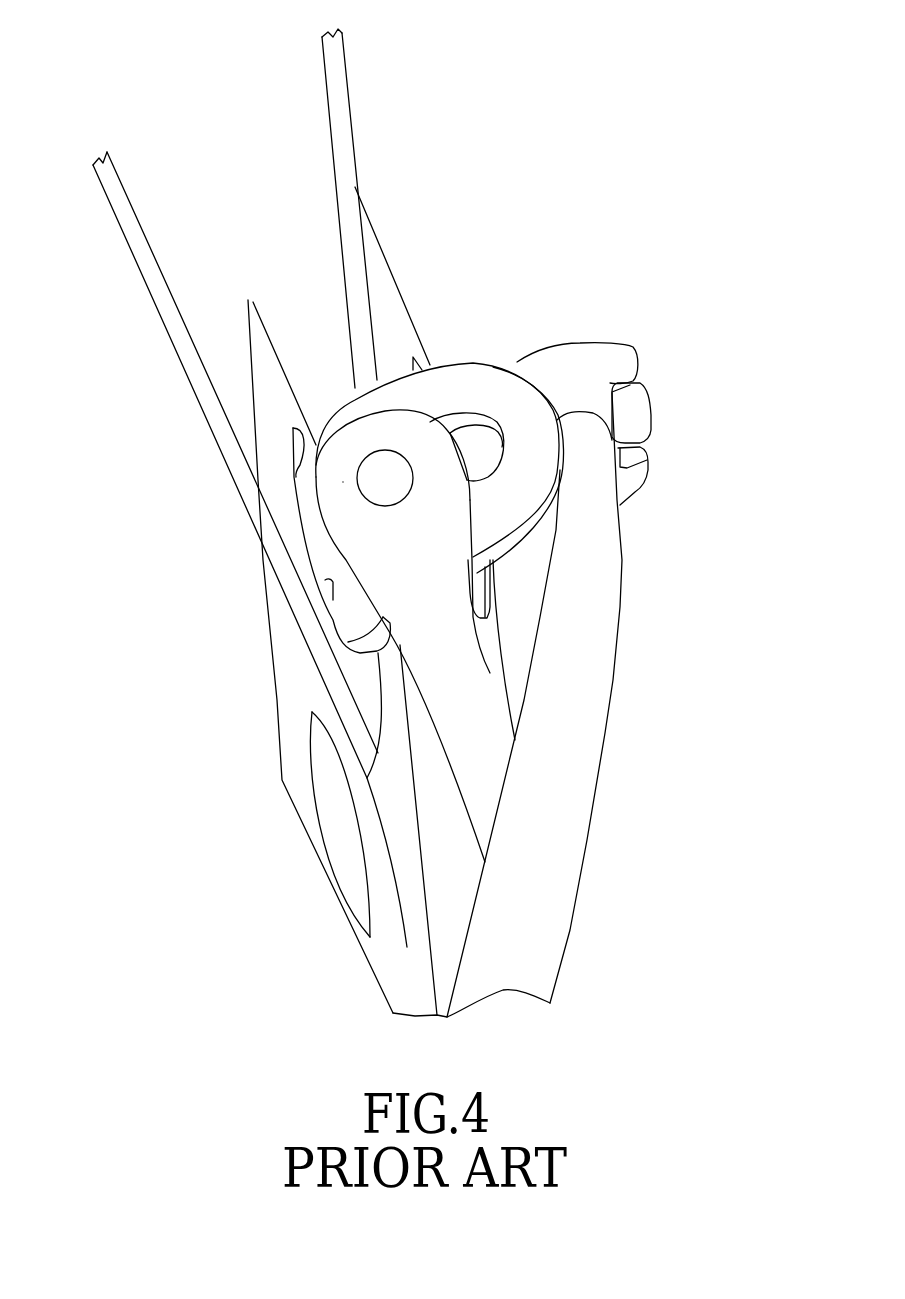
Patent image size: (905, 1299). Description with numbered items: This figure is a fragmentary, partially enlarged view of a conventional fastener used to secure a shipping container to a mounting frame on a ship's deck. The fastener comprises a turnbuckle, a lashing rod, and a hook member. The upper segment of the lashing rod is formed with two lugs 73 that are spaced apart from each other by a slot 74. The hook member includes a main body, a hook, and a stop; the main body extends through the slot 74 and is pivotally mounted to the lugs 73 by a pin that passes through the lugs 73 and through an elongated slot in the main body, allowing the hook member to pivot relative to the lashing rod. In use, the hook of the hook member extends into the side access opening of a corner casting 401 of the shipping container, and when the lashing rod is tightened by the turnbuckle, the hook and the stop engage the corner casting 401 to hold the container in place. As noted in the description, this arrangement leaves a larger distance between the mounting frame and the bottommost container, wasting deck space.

The corner casting 401 is at (260, 342).
The lugs 73 is at (343, 482).
The slot 74 is at (482, 588).